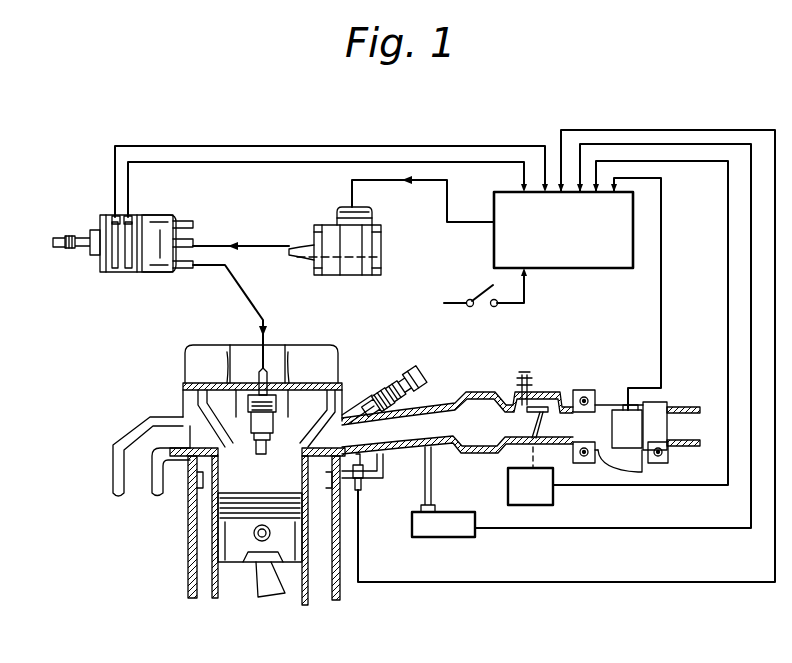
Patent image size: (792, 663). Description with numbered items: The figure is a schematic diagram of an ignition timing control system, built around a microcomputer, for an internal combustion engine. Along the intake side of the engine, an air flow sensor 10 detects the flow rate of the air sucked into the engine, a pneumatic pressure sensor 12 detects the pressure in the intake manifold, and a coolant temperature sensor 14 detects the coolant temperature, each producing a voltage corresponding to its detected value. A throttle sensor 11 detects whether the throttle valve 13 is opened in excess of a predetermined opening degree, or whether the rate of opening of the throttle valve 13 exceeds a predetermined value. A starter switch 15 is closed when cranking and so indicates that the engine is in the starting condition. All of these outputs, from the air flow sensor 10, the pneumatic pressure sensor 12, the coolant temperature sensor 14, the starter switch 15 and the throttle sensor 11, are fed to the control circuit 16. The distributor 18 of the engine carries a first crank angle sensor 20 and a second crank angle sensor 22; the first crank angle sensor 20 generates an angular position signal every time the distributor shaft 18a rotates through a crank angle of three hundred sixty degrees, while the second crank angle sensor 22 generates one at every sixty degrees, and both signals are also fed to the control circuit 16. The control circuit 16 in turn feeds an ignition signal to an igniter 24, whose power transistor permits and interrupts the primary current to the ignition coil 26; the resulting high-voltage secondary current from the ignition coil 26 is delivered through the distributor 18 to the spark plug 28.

The air flow sensor 10 is at (622, 397).
The throttle sensor 11 is at (508, 490).
The pneumatic pressure sensor 12 is at (450, 538).
The throttle valve 13 is at (527, 441).
The coolant temperature sensor 14 is at (363, 478).
The starter switch 15 is at (486, 307).
The control circuit 16 is at (600, 270).
The distributor 18 is at (132, 237).
The distributor shaft 18a is at (62, 252).
The first crank angle sensor 20 is at (131, 217).
The second crank angle sensor 22 is at (113, 216).
The igniter 24 is at (355, 228).
The ignition coil 26 is at (336, 219).
The spark plug 28 is at (272, 368).